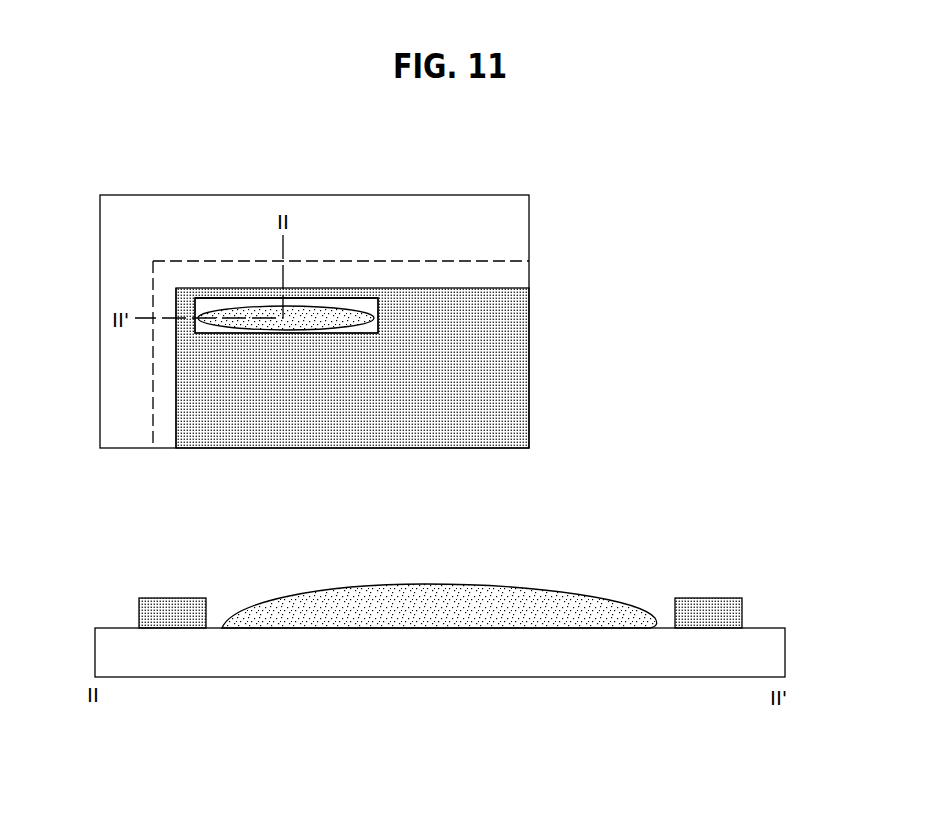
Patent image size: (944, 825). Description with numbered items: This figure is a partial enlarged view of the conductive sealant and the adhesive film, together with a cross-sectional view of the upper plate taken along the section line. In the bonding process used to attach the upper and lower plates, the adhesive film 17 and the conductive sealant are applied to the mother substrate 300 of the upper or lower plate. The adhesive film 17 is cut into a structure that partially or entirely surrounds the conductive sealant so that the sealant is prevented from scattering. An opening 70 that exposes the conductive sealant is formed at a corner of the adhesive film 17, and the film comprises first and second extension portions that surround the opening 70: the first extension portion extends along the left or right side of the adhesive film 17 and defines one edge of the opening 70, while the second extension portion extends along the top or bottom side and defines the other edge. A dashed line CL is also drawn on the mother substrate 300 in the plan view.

The mother substrate 300 is at (405, 215).
The cutting line CL is at (498, 262).
The adhesive film 17 is at (520, 382).
The opening 70 is at (203, 305).